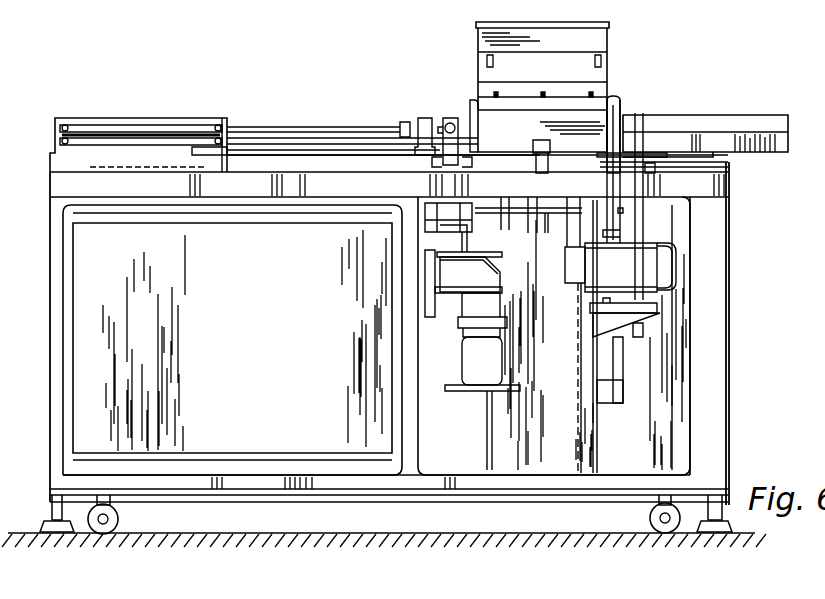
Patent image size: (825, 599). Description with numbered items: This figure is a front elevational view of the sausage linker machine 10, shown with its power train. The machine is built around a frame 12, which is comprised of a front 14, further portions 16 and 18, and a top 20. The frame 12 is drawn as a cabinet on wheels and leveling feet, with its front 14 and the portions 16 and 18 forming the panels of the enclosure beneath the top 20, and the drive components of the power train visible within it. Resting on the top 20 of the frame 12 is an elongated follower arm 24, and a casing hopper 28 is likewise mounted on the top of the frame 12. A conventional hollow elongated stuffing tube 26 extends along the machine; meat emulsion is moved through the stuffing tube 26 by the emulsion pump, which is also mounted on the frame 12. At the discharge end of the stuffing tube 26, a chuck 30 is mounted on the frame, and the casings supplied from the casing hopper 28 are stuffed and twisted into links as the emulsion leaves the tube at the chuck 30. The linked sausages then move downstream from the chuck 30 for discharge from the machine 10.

The sausage linker machine 10 is at (303, 102).
The frame 12 is at (283, 505).
The front 14 is at (210, 327).
The frame portion 16 is at (48, 280).
The frame portion 18 is at (722, 416).
The top 20 is at (276, 127).
The follower arm 24 is at (288, 144).
The stuffing tube 26 is at (250, 128).
The casing hopper 28 is at (593, 37).
The chuck 30 is at (613, 103).